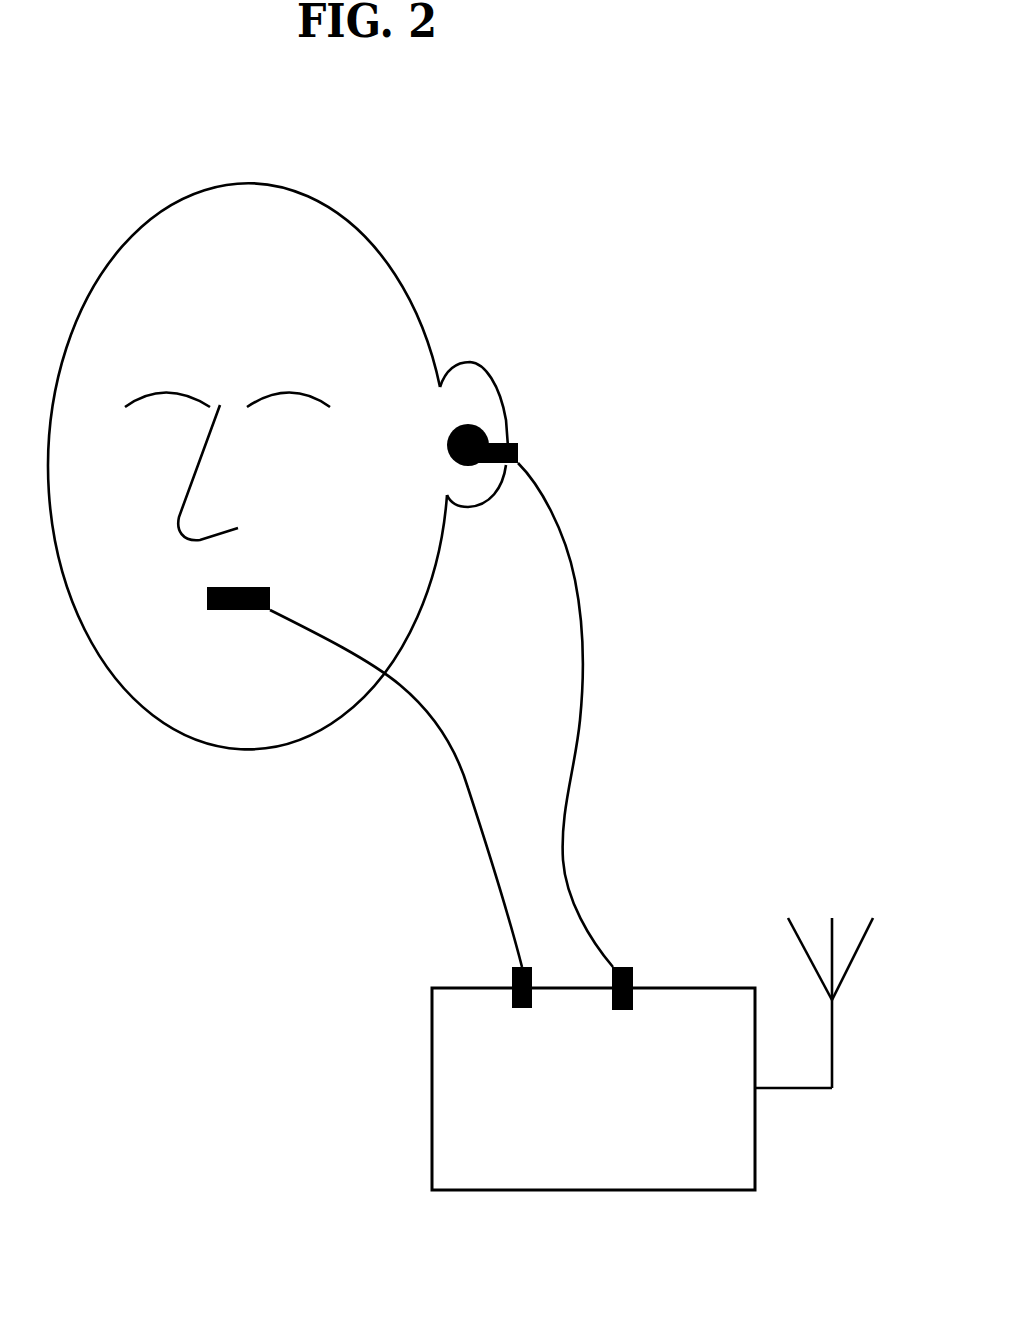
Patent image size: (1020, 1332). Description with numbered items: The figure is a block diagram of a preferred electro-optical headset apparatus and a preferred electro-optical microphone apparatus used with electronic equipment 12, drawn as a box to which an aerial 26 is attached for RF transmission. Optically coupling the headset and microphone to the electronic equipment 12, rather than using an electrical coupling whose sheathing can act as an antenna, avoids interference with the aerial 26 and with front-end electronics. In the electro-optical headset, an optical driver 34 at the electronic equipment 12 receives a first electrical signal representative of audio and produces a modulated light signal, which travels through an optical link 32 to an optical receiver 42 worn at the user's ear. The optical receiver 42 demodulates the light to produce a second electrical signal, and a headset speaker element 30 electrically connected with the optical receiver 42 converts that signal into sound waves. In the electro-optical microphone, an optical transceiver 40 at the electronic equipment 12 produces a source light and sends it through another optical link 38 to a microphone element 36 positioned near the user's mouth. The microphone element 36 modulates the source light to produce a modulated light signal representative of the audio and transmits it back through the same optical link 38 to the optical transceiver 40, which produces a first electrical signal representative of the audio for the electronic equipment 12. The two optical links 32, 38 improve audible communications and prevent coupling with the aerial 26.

The electronic equipment 12 is at (578, 1136).
The aerial 26 is at (833, 1028).
The headset speaker element 30 is at (468, 424).
The optical link 32 is at (550, 500).
The optical driver 34 is at (632, 967).
The microphone element 36 is at (228, 610).
The optical link 38 is at (468, 788).
The optical transceiver 40 is at (512, 967).
The optical receiver 42 is at (520, 445).